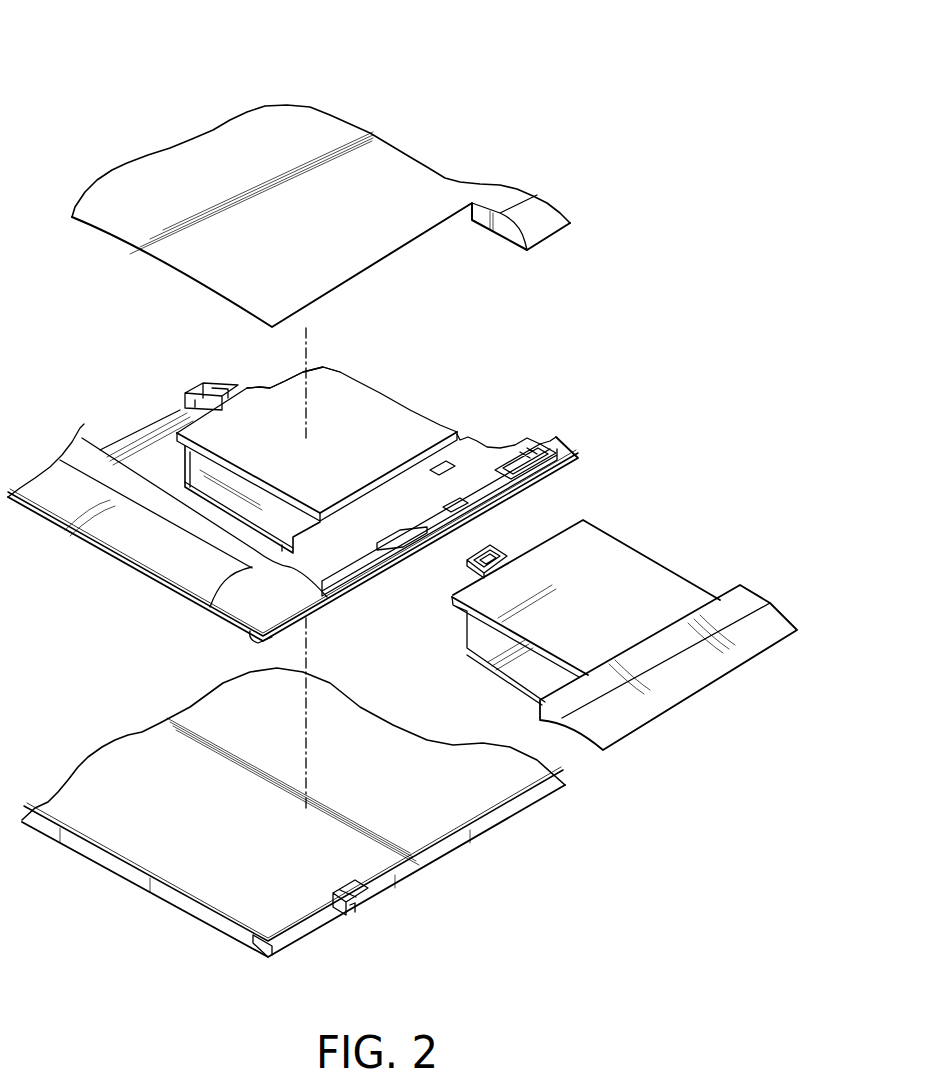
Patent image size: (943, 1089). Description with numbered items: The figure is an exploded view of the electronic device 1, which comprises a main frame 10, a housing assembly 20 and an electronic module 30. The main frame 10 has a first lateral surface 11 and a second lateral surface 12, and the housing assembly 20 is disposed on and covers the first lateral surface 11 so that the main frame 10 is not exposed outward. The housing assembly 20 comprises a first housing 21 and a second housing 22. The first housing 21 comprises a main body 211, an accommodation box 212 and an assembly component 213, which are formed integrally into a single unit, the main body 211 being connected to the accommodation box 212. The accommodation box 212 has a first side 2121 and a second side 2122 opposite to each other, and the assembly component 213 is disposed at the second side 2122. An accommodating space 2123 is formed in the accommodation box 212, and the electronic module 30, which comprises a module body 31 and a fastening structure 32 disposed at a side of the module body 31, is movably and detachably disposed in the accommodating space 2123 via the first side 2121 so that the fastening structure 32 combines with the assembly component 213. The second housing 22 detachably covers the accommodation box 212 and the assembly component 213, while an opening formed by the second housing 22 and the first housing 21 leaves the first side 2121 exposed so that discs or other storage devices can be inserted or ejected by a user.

The electronic device 1 is at (30, 34).
The main frame 10 is at (293, 819).
The first lateral surface 11 is at (107, 775).
The second lateral surface 12 is at (117, 870).
The housing assembly 20 is at (675, 302).
The first housing 21 is at (339, 480).
The main body 211 is at (157, 563).
The accommodation box 212 is at (317, 448).
The first side 2121 is at (462, 447).
The second side 2122 is at (295, 378).
The accommodating space 2123 is at (442, 462).
The assembly component 213 is at (217, 373).
The second housing 22 is at (553, 245).
The electronic module 30 is at (611, 649).
The module body 31 is at (635, 578).
The fastening structure 32 is at (473, 560).